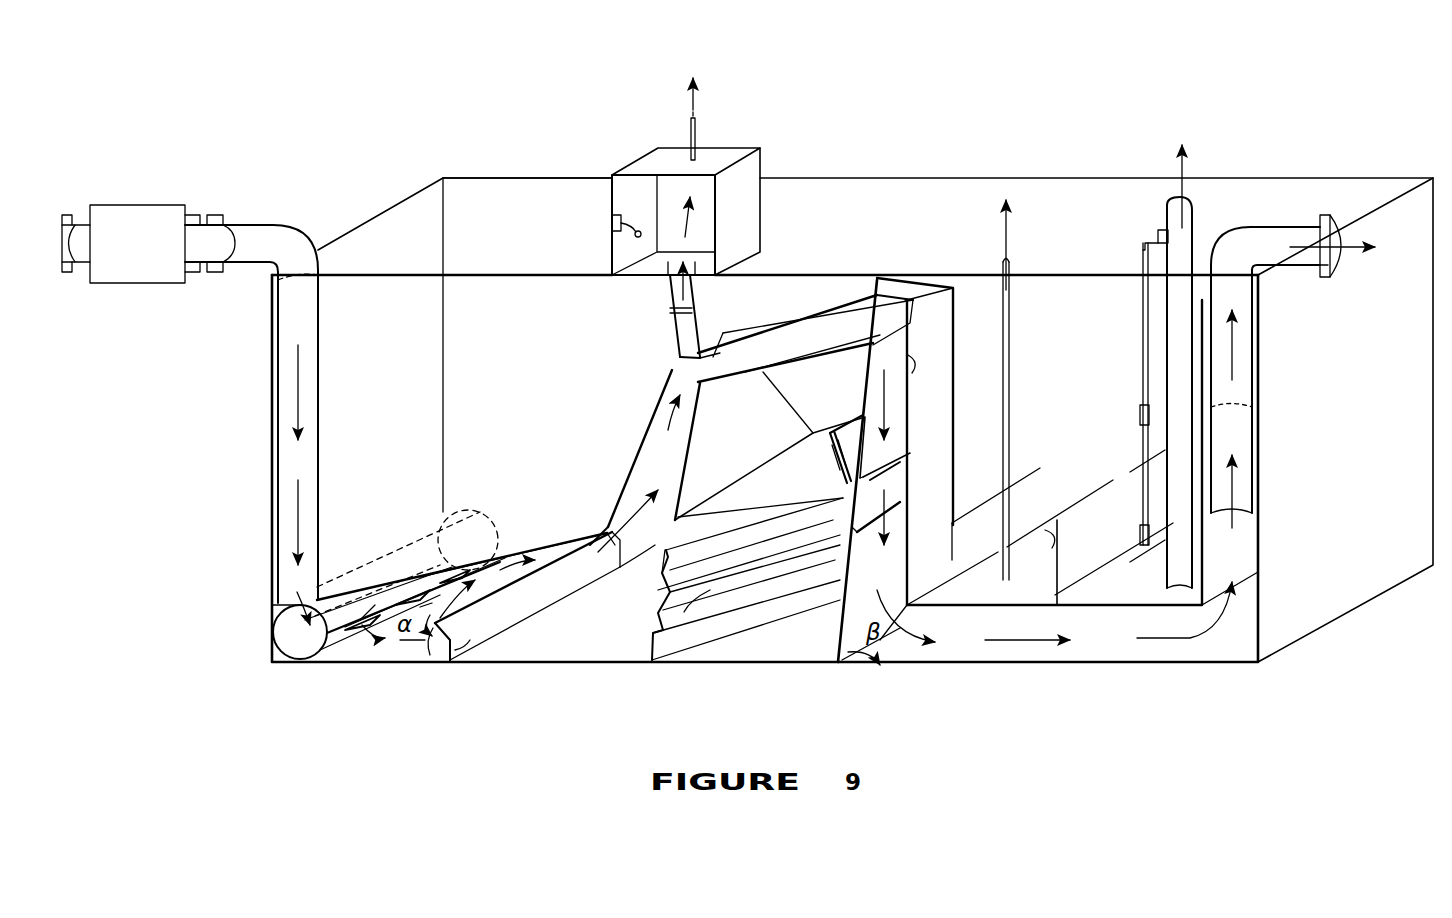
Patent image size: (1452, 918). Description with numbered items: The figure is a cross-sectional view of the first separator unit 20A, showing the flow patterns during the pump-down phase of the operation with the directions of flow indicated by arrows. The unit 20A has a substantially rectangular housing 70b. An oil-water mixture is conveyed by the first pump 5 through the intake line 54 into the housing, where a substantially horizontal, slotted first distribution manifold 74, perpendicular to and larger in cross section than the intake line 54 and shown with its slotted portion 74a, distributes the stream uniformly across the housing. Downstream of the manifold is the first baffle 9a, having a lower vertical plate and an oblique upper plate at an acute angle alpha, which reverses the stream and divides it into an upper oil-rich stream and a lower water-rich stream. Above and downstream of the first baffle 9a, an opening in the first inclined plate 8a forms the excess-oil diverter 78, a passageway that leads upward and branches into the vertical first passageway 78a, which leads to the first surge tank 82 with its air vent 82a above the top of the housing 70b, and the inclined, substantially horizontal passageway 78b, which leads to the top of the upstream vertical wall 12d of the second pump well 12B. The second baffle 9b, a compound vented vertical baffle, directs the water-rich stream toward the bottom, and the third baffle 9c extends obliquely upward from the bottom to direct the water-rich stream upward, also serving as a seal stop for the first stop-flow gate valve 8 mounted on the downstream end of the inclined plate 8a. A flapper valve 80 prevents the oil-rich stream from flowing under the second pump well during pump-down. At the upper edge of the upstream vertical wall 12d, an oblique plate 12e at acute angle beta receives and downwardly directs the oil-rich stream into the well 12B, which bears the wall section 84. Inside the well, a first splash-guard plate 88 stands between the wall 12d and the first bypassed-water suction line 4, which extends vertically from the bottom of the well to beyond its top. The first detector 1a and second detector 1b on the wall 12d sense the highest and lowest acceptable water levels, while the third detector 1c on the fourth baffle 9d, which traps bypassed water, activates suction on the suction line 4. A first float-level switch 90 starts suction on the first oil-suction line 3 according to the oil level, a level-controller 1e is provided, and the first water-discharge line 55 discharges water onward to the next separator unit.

The first separator unit 20A is at (452, 105).
The first pump 5 is at (115, 210).
The intake line 54 is at (280, 228).
The first distribution manifold 74 is at (330, 655).
The inclined conveyor plate 74a is at (345, 660).
The first baffle 9a is at (480, 623).
The second baffle 9b is at (700, 650).
The third baffle 9c is at (860, 660).
The fourth baffle 9d is at (1065, 595).
The excess-oil diverter 78 is at (645, 450).
The vertical first passageway 78a is at (675, 330).
The inclined substantially horizontal passageway 78b is at (775, 338).
The flapper valve 80 is at (890, 310).
The first stop-flow gate valve 8 is at (850, 425).
The first inclined plate 8a is at (790, 478).
The oblique plate 12e is at (930, 320).
The upstream vertical wall 12d is at (905, 460).
The second pump well 12B is at (1092, 396).
The first detector 1a is at (903, 360).
The second detector 1b is at (905, 530).
The third detector 1c is at (1052, 540).
The level-controller 1e is at (612, 222).
The compartment wall 84 is at (990, 578).
The first splash-guard plate 88 is at (1078, 438).
The first float-level switch 90 is at (1158, 234).
The first bypassed-water suction line 4 is at (1012, 260).
The first oil-suction line 3 is at (1193, 230).
The first water-discharge line 55 is at (1260, 225).
The housing 70b is at (565, 192).
The first surge tank 82 is at (752, 172).
The air vent 82a is at (705, 132).